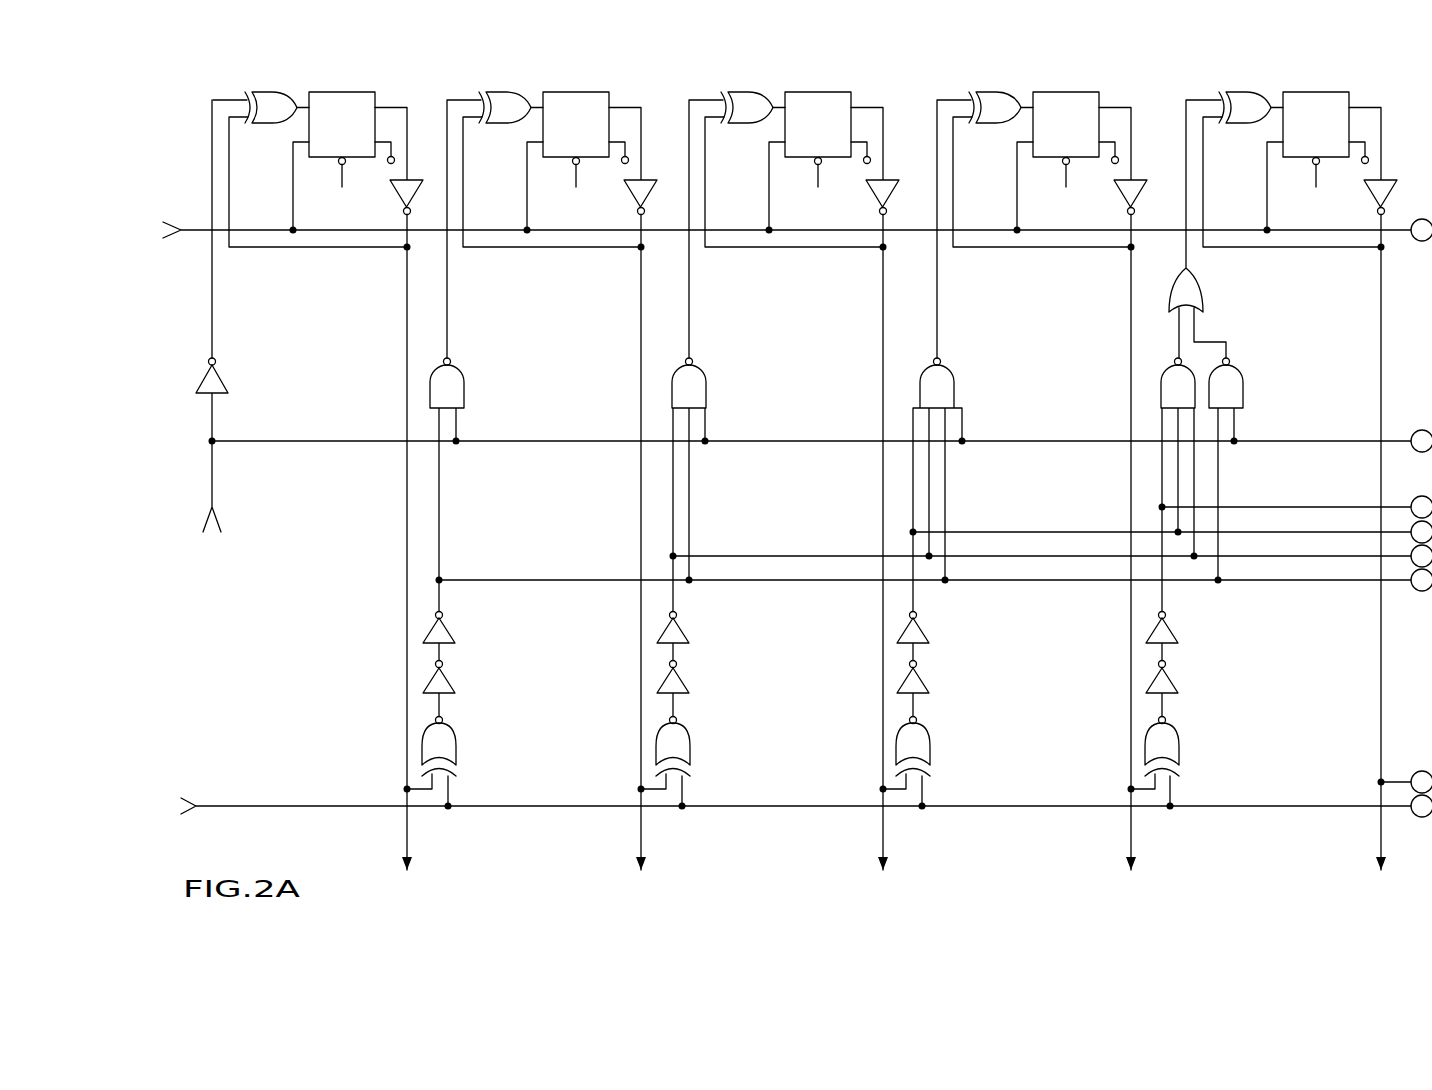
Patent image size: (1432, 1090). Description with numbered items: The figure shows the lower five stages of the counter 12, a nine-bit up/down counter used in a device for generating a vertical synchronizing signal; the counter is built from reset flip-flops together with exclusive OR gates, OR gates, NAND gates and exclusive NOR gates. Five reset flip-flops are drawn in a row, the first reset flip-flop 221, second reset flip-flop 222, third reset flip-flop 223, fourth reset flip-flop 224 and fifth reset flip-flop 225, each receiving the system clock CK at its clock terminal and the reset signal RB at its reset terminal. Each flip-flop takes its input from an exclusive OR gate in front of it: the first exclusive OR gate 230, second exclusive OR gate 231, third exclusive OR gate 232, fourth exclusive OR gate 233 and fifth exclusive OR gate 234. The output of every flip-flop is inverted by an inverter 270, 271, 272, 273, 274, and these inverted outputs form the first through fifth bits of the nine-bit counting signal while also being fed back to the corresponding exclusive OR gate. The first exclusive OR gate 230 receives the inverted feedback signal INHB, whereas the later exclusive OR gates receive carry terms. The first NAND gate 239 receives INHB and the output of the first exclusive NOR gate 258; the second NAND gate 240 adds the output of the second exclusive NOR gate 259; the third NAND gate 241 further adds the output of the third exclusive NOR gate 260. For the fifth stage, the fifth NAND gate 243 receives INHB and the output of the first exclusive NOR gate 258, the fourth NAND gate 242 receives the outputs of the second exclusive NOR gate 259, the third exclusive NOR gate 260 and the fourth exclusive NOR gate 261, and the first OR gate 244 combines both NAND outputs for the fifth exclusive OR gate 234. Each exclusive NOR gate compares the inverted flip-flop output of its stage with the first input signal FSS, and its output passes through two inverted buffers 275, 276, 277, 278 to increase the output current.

The counter 12 is at (195, 64).
The first reset flip-flop 221 is at (344, 90).
The second reset flip-flop 222 is at (578, 90).
The third reset flip-flop 223 is at (820, 90).
The fourth reset flip-flop 224 is at (1068, 90).
The fifth reset flip-flop 225 is at (1318, 90).
The first exclusive OR gate 230 is at (269, 90).
The second exclusive OR gate 231 is at (503, 90).
The third exclusive OR gate 232 is at (745, 90).
The fourth exclusive OR gate 233 is at (993, 90).
The fifth exclusive OR gate 234 is at (1243, 90).
The first NAND gate 239 is at (464, 392).
The second NAND gate 240 is at (706, 392).
The third NAND gate 241 is at (954, 392).
The fourth NAND gate 242 is at (1161, 392).
The fifth NAND gate 243 is at (1243, 392).
The first OR gate 244 is at (1203, 297).
The first exclusive NOR gate 258 is at (456, 751).
The second exclusive NOR gate 259 is at (690, 751).
The third exclusive NOR gate 260 is at (930, 751).
The fourth exclusive NOR gate 261 is at (1179, 751).
The inverter 270 is at (397, 201).
The inverter 271 is at (631, 201).
The inverter 272 is at (873, 201).
The inverter 273 is at (1121, 201).
The inverter 274 is at (1372, 201).
The buffer 275 is at (463, 612).
The buffer 276 is at (697, 612).
The buffer 277 is at (937, 612).
The buffer 278 is at (1202, 612).